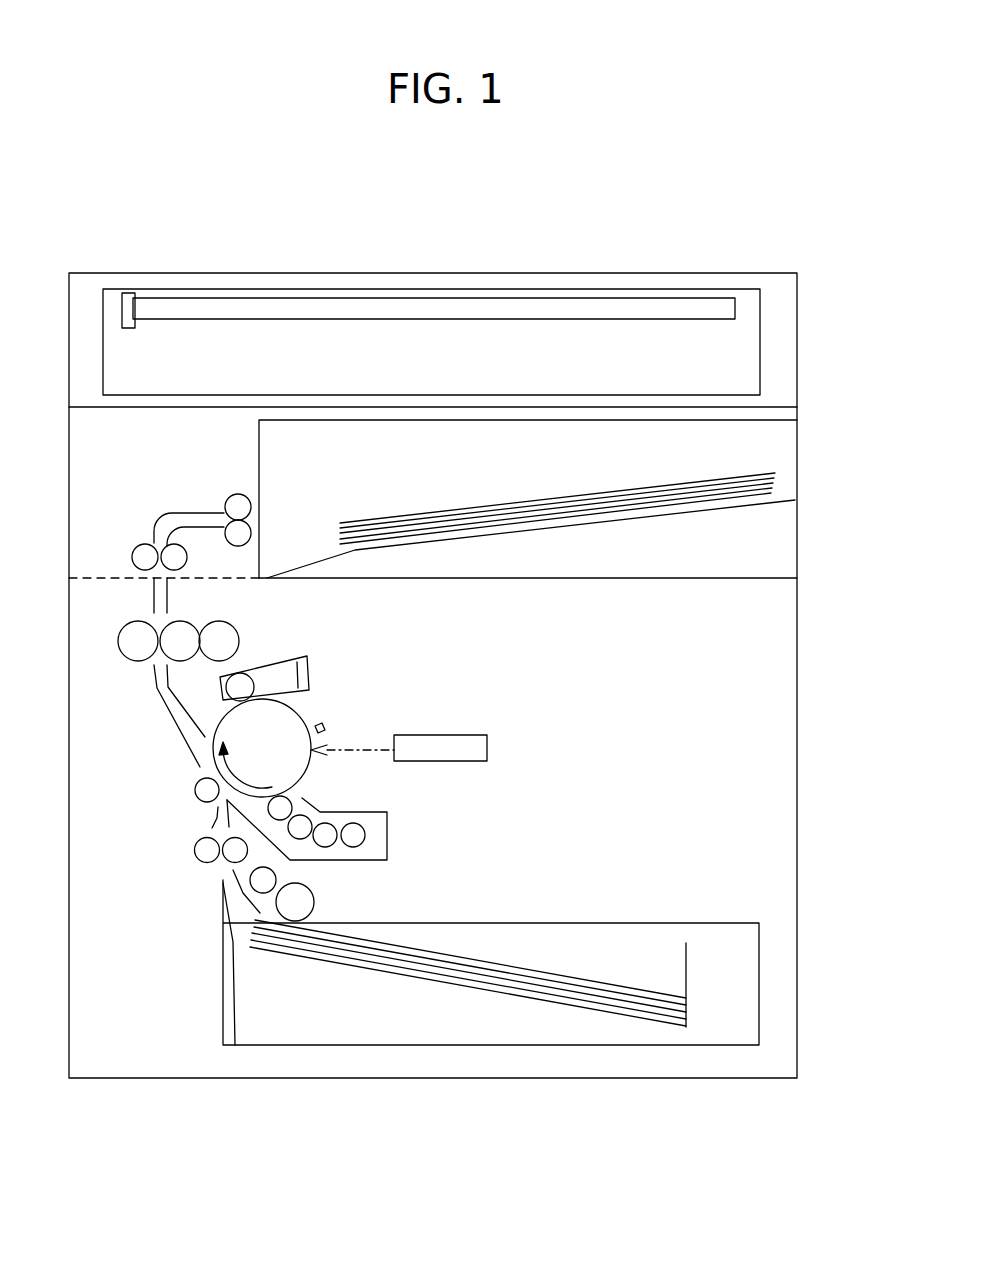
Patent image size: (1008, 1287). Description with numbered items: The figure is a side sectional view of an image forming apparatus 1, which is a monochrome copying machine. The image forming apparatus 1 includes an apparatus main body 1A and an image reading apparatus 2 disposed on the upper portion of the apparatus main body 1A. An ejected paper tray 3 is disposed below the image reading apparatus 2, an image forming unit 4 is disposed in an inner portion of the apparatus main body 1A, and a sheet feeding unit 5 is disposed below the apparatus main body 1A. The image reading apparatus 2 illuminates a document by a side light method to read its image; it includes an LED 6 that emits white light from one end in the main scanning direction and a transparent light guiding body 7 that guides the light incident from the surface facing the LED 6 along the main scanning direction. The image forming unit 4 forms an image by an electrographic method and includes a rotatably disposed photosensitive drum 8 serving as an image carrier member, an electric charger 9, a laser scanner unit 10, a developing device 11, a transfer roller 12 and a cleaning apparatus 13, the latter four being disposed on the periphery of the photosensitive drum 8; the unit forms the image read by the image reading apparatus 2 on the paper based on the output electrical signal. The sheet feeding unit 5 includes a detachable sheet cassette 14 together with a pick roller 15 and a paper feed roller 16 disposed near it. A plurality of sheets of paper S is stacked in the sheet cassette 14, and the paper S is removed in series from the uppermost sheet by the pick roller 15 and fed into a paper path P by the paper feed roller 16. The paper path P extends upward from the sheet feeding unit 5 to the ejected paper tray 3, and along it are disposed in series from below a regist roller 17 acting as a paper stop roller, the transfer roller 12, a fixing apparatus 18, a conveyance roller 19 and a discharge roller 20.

The image forming apparatus 1 is at (717, 247).
The apparatus main body 1A is at (798, 818).
The image reading apparatus 2 is at (467, 335).
The ejected paper tray 3 is at (318, 558).
The image forming unit 4 is at (288, 697).
The sheet feeding unit 5 is at (431, 1008).
The LED 6 is at (129, 330).
The light guiding body 7 is at (530, 322).
The photosensitive drum 8 is at (310, 771).
The electric charger 9 is at (326, 720).
The laser scanner unit 10 is at (474, 735).
The developing device 11 is at (390, 838).
The transfer roller 12 is at (195, 793).
The cleaning apparatus 13 is at (290, 655).
The sheet cassette 14 is at (512, 1048).
The pick roller 15 is at (316, 895).
The paper feed roller 16 is at (248, 887).
The regist roller 17 is at (188, 857).
The fixing apparatus 18 is at (132, 663).
The conveyance roller 19 is at (135, 548).
The discharge roller 20 is at (236, 490).
The paper path P is at (180, 720).
The paper S is at (578, 497).